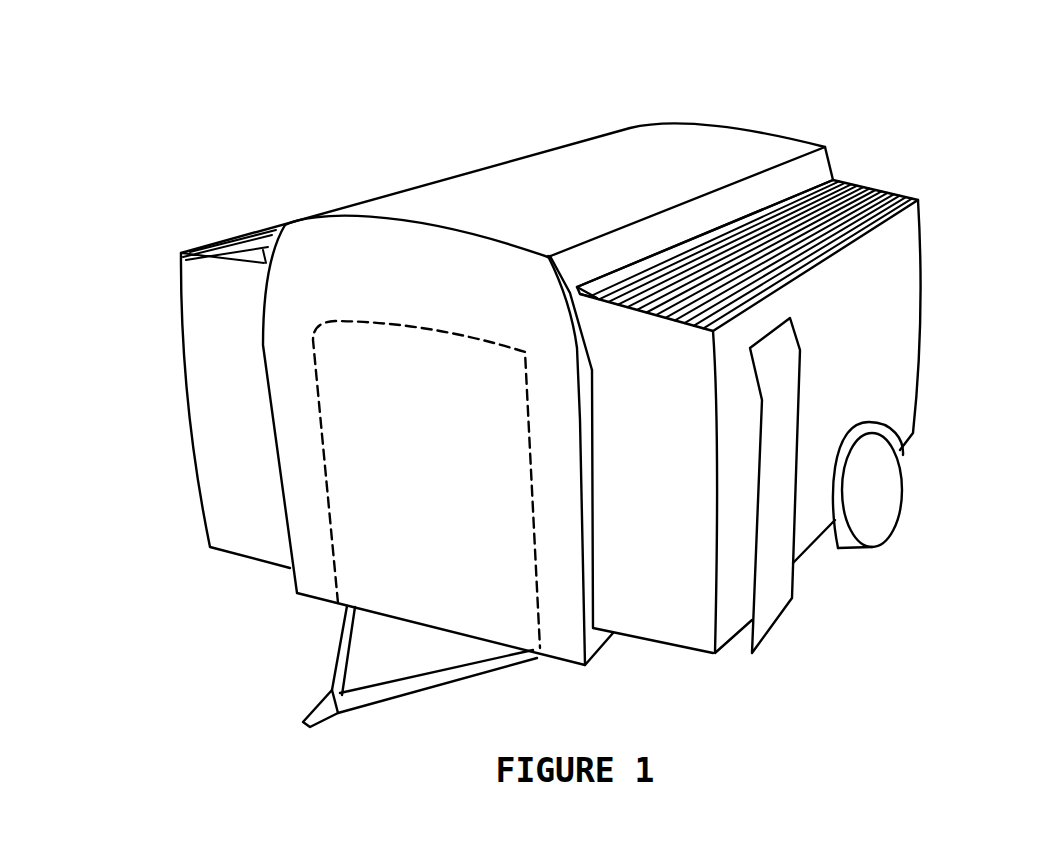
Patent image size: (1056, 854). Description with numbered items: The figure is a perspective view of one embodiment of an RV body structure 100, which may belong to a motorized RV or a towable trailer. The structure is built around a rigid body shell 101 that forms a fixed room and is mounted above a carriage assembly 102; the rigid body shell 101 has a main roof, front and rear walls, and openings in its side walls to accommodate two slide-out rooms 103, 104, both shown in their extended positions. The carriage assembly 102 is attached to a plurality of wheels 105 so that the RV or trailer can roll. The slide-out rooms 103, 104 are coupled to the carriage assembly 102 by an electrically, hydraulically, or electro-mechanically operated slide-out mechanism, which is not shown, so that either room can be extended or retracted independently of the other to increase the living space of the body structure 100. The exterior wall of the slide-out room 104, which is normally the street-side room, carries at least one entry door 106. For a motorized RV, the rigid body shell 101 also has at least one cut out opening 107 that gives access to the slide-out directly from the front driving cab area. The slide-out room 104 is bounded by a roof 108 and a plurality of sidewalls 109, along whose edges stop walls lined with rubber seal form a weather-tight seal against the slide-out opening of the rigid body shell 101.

The RV body structure 100 is at (710, 105).
The rigid body shell 101 is at (602, 160).
The carriage assembly 102 is at (347, 618).
The slide-out room 103 is at (220, 398).
The slide-out room 104 is at (892, 293).
The wheels 105 is at (880, 465).
The entry door 106 is at (782, 347).
The cut out opening 107 is at (400, 403).
The roof 108 is at (873, 197).
The sidewalls 109 is at (688, 628).